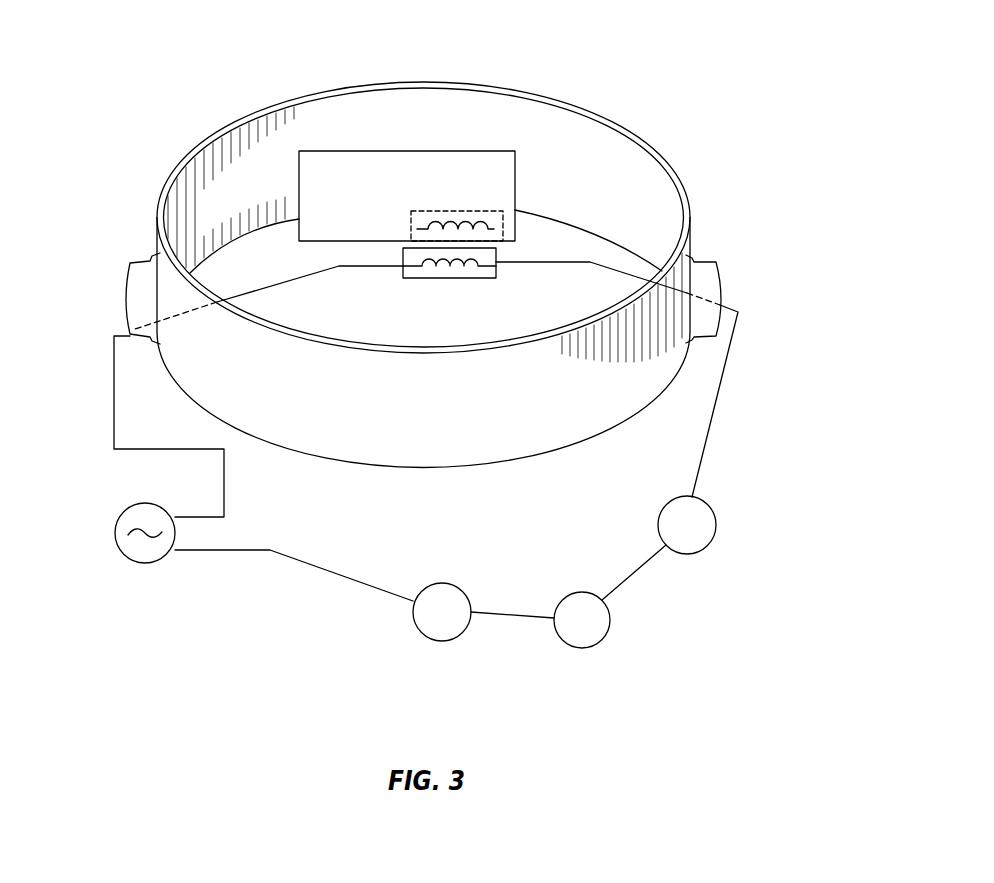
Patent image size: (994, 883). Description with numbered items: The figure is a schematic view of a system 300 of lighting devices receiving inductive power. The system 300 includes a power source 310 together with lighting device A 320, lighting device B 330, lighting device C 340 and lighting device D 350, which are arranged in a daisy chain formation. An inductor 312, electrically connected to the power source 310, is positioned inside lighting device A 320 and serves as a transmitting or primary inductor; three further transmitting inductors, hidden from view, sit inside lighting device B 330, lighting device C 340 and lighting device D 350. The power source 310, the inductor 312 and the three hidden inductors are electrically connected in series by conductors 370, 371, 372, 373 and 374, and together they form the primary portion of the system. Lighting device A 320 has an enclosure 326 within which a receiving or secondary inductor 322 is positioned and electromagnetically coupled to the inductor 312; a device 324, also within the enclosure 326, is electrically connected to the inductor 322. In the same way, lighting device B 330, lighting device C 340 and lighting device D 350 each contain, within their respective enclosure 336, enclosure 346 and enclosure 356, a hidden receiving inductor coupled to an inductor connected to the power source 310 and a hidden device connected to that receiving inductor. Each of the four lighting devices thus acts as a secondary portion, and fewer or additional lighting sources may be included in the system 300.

The system 300 is at (690, 56).
The power source 310 is at (145, 503).
The inductor 312 is at (450, 279).
The lighting device A 320 is at (494, 68).
The inductor 322 is at (492, 210).
The device 324 is at (424, 207).
The enclosure 326 is at (423, 83).
The lighting device B 330 is at (727, 571).
The enclosure 336 is at (689, 495).
The lighting device C 340 is at (599, 665).
The enclosure 346 is at (582, 592).
The lighting device D 350 is at (423, 658).
The enclosure 356 is at (442, 583).
The conductor 370 is at (114, 393).
The conductor 371 is at (713, 420).
The conductor 372 is at (638, 572).
The conductor 373 is at (512, 618).
The conductor 374 is at (358, 583).